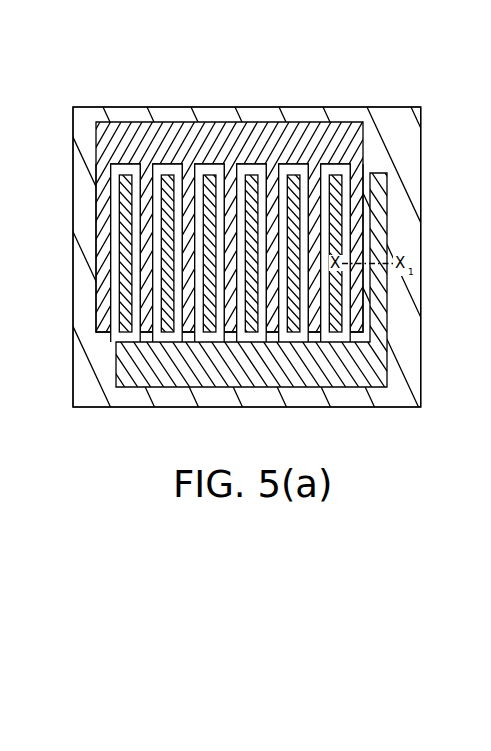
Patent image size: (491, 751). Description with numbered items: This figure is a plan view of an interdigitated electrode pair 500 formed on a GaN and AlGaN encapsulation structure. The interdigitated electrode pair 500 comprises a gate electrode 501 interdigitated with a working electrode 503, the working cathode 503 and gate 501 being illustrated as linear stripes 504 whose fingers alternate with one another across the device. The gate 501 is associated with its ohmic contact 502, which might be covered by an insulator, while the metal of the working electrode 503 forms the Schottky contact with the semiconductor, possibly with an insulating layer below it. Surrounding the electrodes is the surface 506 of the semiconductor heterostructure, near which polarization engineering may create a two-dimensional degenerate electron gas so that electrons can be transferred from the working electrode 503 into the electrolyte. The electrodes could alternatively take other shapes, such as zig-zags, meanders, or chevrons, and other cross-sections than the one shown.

The interdigitated electrode pair 500 is at (114, 34).
The gate electrode 501 is at (157, 106).
The ohmic contact 502 is at (270, 182).
The working electrode 503 is at (208, 338).
The linear stripes 504 is at (98, 195).
The surface of the semiconductor heterostructure 506 is at (393, 106).